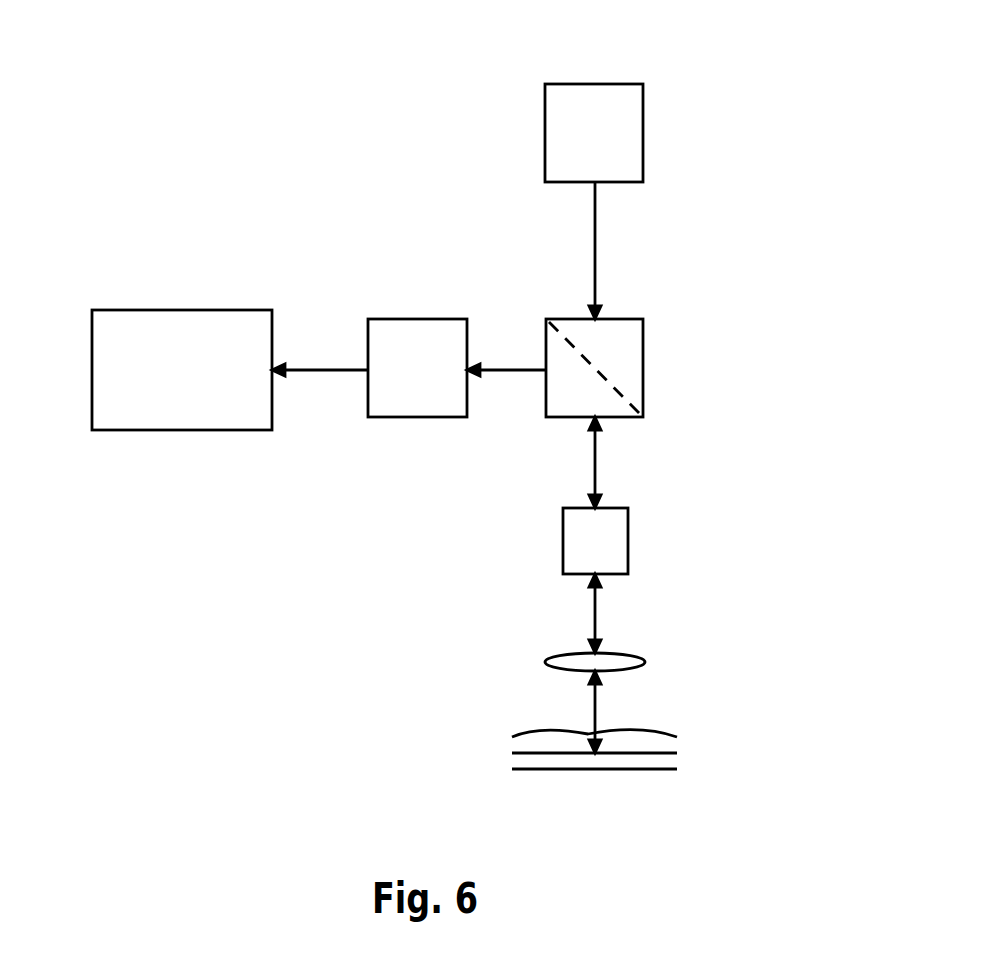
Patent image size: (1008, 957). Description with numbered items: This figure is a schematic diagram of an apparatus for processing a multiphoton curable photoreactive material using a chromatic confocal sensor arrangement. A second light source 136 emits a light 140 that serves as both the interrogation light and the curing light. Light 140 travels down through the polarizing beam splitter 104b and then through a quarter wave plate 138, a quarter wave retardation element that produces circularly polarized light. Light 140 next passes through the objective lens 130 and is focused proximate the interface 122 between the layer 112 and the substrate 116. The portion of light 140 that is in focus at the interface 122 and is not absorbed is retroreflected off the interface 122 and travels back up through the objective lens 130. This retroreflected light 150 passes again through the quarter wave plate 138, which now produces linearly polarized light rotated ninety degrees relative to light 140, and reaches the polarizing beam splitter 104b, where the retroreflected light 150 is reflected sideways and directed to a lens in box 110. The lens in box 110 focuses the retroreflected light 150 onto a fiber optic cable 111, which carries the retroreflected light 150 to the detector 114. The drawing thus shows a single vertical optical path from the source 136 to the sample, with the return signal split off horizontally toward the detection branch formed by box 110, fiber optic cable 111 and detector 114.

The second light source 136 is at (593, 127).
The light 140 is at (595, 230).
The polarizing beam splitter 104b is at (610, 338).
The box containing a lens 110 is at (417, 338).
The fiber optic cable 111 is at (335, 368).
The detector 114 is at (143, 310).
The quarter wave plate 138 is at (597, 540).
The retroreflected light 150 is at (597, 622).
The objective lens 130 is at (593, 663).
The layer 112 is at (643, 743).
The interface 122 is at (518, 753).
The substrate 116 is at (570, 759).